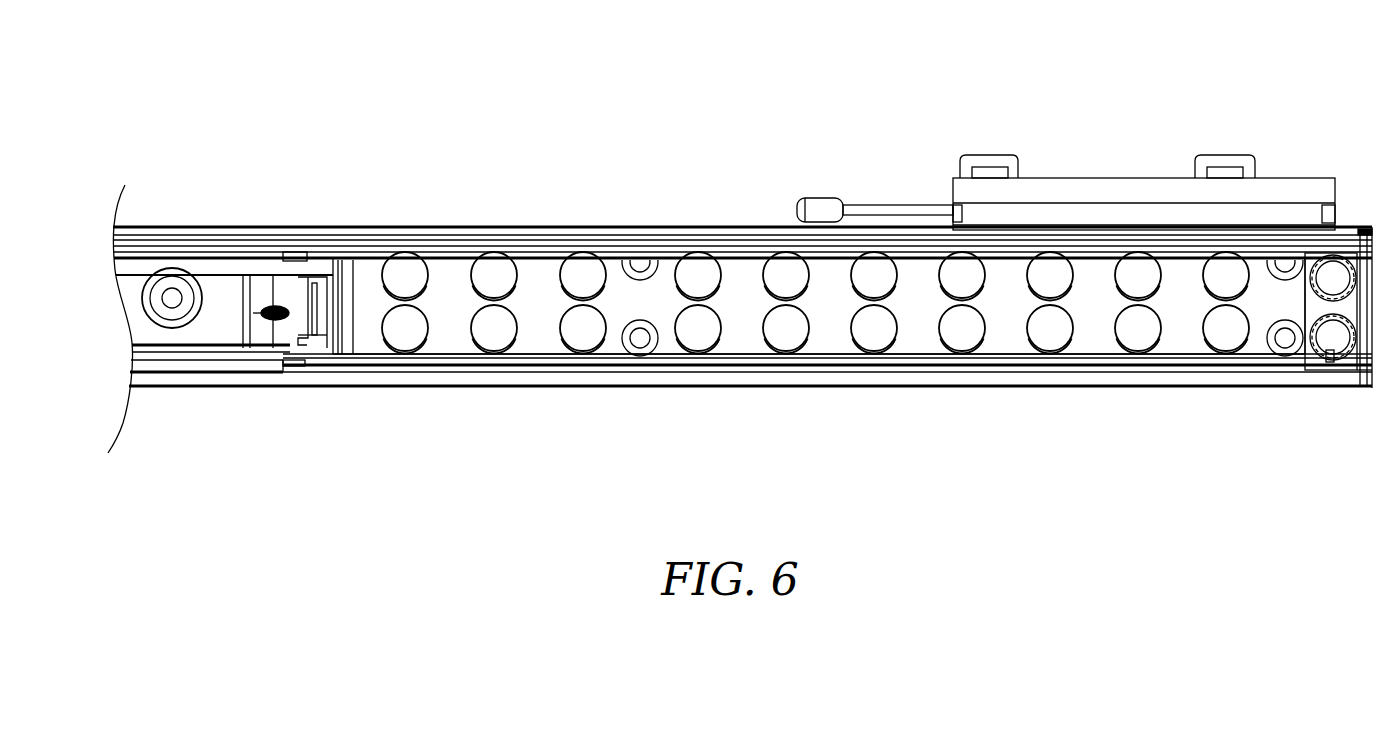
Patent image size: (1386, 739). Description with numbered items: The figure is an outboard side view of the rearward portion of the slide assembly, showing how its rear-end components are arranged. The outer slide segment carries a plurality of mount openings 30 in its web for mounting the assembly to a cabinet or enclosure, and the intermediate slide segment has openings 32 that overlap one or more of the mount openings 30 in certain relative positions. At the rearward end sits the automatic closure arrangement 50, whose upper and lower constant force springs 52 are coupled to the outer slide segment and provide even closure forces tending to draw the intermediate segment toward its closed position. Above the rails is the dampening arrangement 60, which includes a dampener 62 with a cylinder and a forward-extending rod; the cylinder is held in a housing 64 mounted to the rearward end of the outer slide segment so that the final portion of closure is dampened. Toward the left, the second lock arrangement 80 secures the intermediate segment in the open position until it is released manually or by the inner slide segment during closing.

The mount openings 30 is at (153, 300).
The openings 32 is at (176, 336).
The automatic closure arrangement 50 is at (1338, 405).
The constant force springs 52 is at (668, 255).
The dampening arrangement 60 is at (1066, 129).
The dampener 62 is at (886, 182).
The housing 64 is at (1112, 190).
The second lock arrangement 80 is at (312, 354).